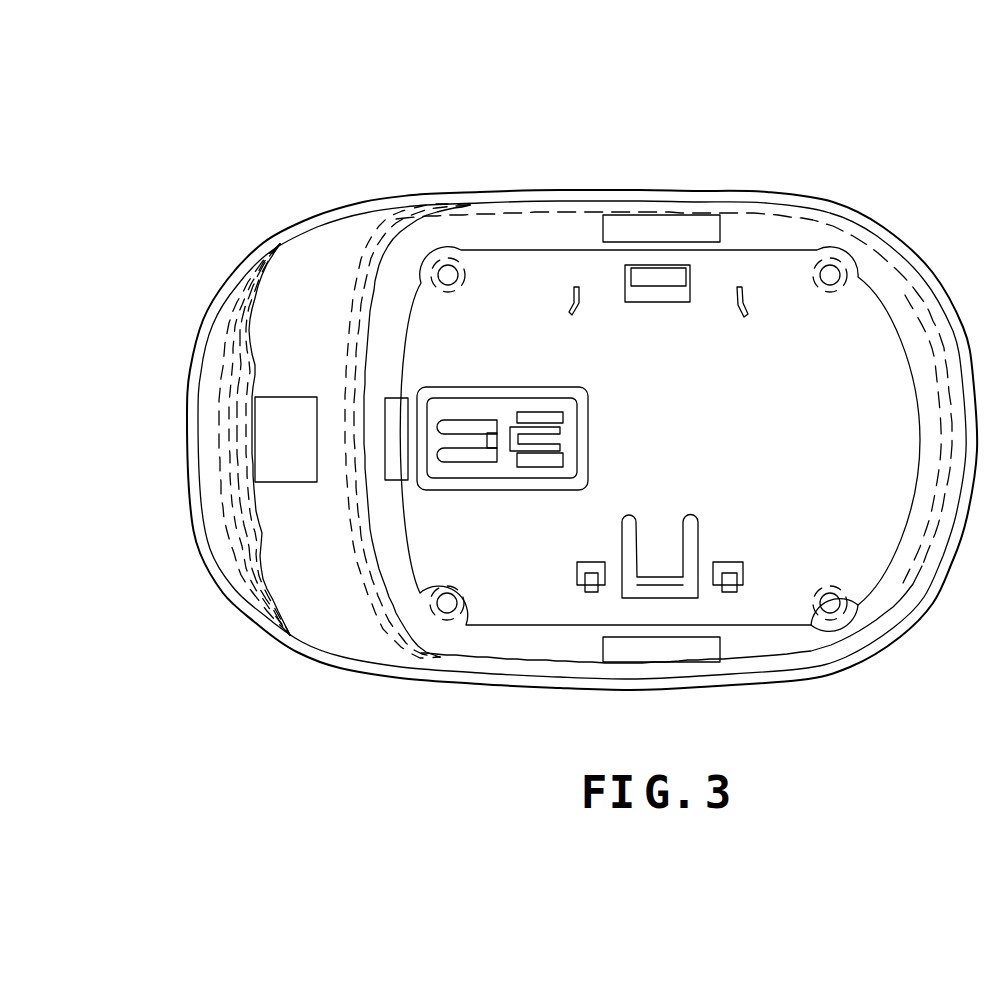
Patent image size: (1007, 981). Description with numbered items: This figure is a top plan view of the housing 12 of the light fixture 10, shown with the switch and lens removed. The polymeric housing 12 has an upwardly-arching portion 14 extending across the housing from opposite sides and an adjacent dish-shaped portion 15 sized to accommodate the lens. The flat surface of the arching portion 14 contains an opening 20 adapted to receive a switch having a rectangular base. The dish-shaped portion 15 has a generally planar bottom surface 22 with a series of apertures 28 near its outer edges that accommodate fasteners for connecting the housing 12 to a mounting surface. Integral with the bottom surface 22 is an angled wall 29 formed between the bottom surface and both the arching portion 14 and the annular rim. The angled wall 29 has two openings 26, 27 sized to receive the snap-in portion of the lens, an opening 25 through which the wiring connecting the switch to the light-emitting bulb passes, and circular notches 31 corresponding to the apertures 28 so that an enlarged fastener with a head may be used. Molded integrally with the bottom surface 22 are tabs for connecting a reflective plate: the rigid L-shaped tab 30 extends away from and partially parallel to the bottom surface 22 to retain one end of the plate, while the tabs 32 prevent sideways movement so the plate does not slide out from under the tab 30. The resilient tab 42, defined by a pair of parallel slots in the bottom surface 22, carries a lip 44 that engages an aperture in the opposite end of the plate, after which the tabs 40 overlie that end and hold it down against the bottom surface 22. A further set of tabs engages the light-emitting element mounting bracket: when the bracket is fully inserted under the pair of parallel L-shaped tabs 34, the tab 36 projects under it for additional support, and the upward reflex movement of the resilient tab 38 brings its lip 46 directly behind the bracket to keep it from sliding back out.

The light fixture 10 is at (400, 149).
The housing 12 is at (800, 172).
The upwardly-arching portion 14 is at (303, 298).
The dish-shaped portion 15 is at (525, 640).
The opening 20 is at (272, 413).
The planar bottom surface 22 is at (720, 414).
The opening 25 is at (398, 462).
The opening 26 is at (675, 223).
The opening 27 is at (673, 650).
The apertures 28 is at (837, 603).
The angled wall 29 is at (917, 303).
The tab 30 is at (655, 277).
The circular notches 31 is at (820, 633).
The tabs 32 is at (568, 292).
The L-shaped tabs 34 is at (548, 420).
The tab 36 is at (519, 436).
The resilient tab 38 is at (467, 434).
The tabs 40 is at (592, 588).
The resilient tab 42 is at (657, 573).
The lip 44 is at (668, 580).
The lip 46 is at (489, 432).